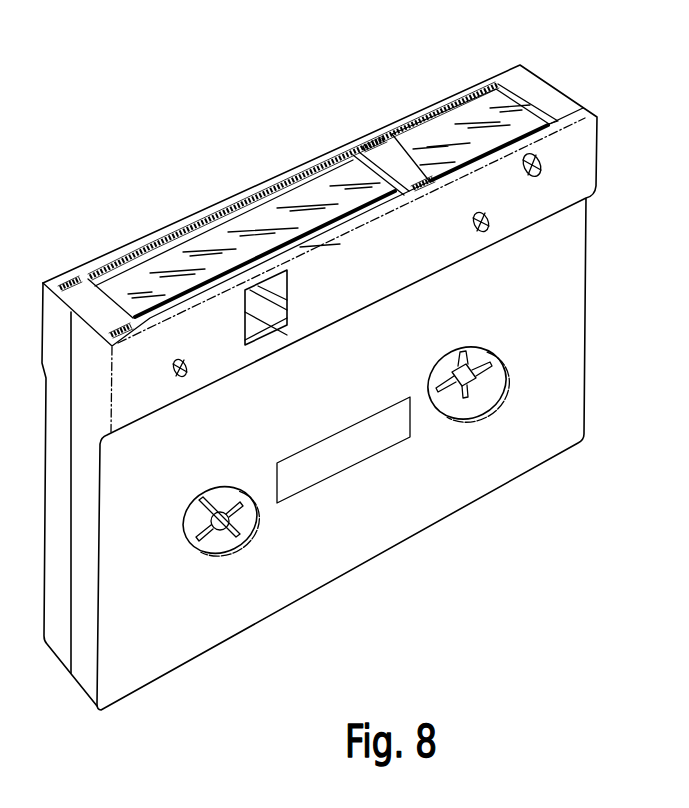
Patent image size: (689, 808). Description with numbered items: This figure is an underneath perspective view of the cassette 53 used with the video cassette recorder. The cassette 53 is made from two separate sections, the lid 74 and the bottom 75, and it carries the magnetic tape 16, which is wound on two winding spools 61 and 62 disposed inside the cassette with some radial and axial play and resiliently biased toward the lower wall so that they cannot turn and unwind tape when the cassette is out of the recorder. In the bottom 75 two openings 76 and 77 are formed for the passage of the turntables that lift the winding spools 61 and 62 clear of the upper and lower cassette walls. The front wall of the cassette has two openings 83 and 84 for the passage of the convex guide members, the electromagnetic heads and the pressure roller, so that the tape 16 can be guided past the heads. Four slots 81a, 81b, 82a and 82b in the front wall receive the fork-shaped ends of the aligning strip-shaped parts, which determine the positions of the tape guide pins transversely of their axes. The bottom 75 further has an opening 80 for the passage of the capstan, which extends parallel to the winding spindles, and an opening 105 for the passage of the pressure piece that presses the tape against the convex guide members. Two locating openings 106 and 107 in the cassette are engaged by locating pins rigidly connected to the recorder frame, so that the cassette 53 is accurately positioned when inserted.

The cassette 53 is at (403, 540).
The lid 74 is at (58, 641).
The bottom 75 is at (87, 668).
The opening 83 is at (303, 178).
The magnetic tape 16 is at (200, 253).
The opening 84 is at (482, 100).
The slot 81a is at (72, 282).
The slot 81b is at (118, 325).
The slot 82a is at (367, 144).
The slot 82b is at (423, 182).
The opening 80 is at (542, 169).
The locating opening 107 is at (490, 226).
The locating opening 106 is at (188, 373).
The opening 105 is at (264, 323).
The opening 76 is at (252, 533).
The winding spool 61 is at (221, 548).
The opening 77 is at (506, 388).
The winding spool 62 is at (470, 400).